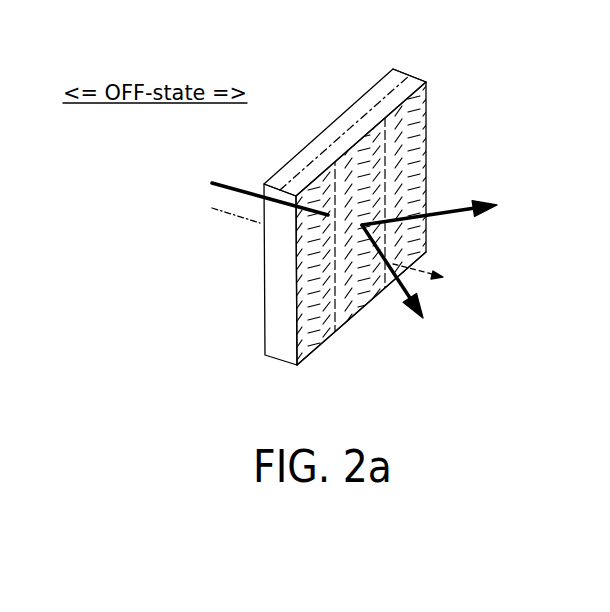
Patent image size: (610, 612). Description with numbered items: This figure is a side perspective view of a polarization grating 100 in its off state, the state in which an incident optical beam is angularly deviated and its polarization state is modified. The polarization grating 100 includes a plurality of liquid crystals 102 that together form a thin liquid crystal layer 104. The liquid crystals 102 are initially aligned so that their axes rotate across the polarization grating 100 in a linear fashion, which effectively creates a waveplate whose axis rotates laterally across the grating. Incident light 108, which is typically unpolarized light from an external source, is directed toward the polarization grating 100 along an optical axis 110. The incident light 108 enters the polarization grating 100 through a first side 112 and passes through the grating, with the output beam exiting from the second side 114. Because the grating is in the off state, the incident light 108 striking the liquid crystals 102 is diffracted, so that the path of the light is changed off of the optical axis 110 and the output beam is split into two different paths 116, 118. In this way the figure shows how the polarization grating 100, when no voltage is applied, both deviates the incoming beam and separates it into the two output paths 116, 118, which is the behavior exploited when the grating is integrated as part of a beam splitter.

The polarization grating 100 is at (427, 112).
The liquid crystals 102 is at (394, 70).
The liquid crystal layer 104 is at (357, 150).
The incident light 108 is at (213, 187).
The optical axis 110 is at (240, 216).
The first side 112 is at (265, 325).
The second side 114 is at (315, 350).
The first output path 116 is at (448, 213).
The second output path 118 is at (412, 298).